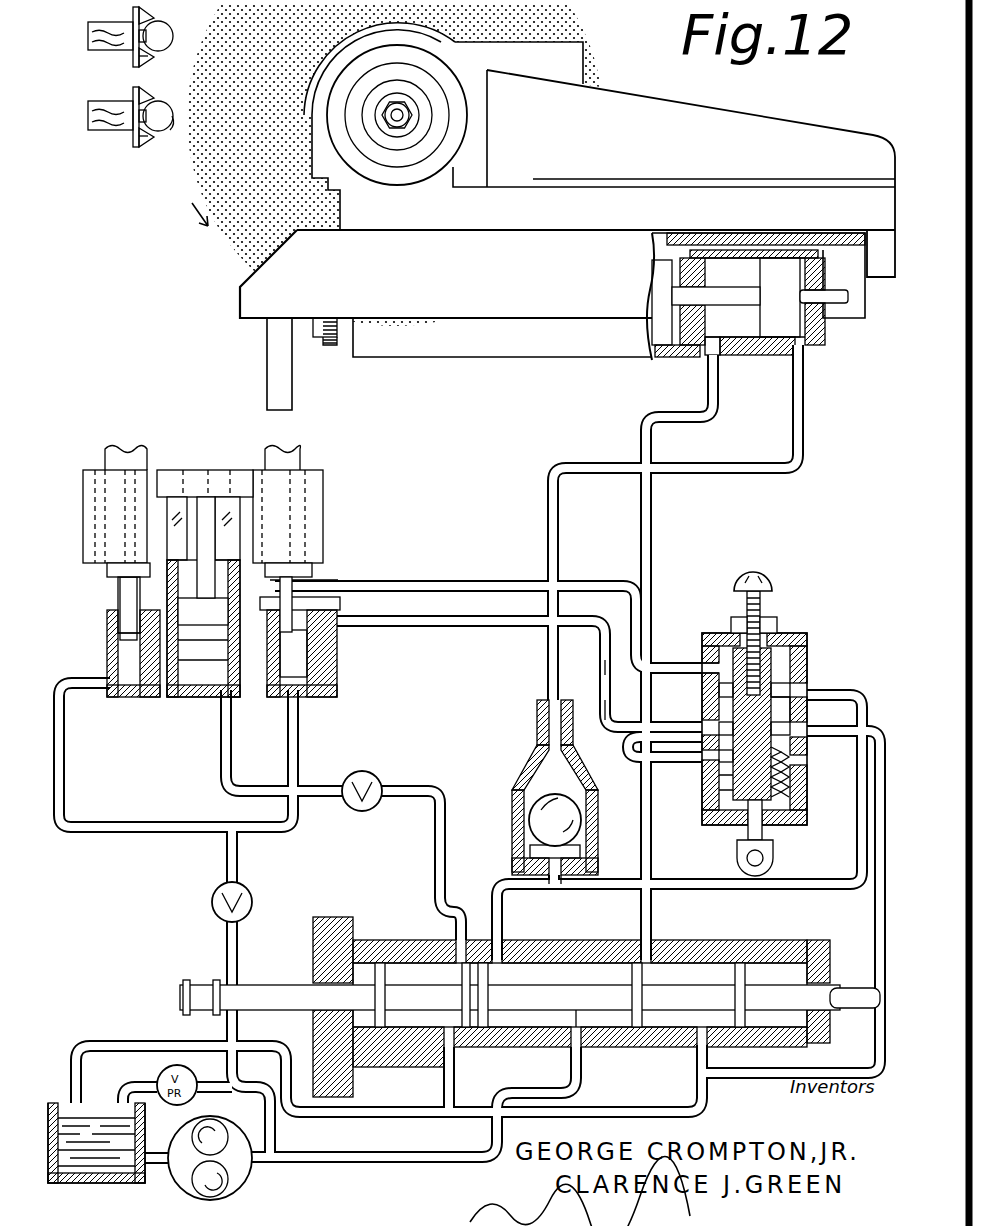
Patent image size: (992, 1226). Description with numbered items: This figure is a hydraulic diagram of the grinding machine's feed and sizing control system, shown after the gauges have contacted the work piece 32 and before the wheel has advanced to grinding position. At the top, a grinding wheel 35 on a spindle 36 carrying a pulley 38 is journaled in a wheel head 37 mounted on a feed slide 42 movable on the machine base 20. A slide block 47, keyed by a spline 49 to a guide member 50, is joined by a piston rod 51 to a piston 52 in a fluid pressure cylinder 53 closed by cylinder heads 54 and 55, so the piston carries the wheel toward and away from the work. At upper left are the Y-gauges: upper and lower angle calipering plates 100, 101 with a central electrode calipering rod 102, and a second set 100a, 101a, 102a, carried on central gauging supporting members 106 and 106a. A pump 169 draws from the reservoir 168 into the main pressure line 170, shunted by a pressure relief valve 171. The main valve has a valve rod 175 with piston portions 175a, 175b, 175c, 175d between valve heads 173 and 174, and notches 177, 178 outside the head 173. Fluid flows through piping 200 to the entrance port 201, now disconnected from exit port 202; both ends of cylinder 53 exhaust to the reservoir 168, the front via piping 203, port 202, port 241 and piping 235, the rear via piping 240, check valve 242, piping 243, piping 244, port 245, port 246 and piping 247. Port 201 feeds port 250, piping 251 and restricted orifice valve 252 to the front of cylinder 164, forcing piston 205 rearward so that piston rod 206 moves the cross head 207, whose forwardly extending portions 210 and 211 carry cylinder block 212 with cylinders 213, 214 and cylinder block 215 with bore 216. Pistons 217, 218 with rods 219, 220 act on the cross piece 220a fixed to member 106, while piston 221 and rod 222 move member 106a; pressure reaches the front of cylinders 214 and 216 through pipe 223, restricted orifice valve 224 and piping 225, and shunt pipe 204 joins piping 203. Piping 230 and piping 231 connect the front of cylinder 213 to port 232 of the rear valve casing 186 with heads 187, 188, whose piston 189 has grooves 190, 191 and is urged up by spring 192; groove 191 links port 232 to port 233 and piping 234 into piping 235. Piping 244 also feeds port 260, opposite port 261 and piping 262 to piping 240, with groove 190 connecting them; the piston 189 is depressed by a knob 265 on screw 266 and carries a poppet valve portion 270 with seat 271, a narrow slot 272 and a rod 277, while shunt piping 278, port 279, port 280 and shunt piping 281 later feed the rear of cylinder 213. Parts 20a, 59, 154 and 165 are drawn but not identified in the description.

The machine base 20 is at (247, 302).
The plate 20a is at (383, 350).
The work piece 32 is at (171, 31).
The grinding wheel 35 is at (247, 226).
The spindle 36 is at (394, 121).
The wheel head 37 is at (488, 170).
The pulley 38 is at (421, 184).
The feed slide 42 is at (830, 140).
The slide block 47 is at (652, 285).
The spline 49 is at (662, 358).
The guide member 50 is at (660, 241).
The piston rod 51 is at (728, 293).
The piston 52 is at (763, 325).
The fluid pressure cylinder 53 is at (768, 355).
The cylinder head 54 is at (700, 360).
The cylinder head 55 is at (828, 322).
The screw 59 is at (328, 347).
The upper angle calipering plate 100 is at (133, 96).
The second upper angle calipering plate 100a is at (133, 12).
The lower angle calipering plate 101 is at (150, 145).
The second lower angle calipering plate 101a is at (150, 55).
The central electrode calipering rod 102 is at (90, 110).
The second electrode calipering rod 102a is at (90, 31).
The central gauging supporting member 106 is at (90, 128).
The central gauging supporting member 106a is at (90, 45).
The piston rod 154 is at (160, 552).
The cylinder 164 is at (170, 690).
The valve body 165 is at (200, 698).
The fluid reservoir 168 is at (93, 1185).
The pump 169 is at (172, 1185).
The main pressure line 170 is at (258, 1163).
The pressure relief valve 171 is at (157, 1068).
The valve head 173 is at (822, 945).
The valve head 174 is at (325, 922).
The valve rod 175 is at (268, 990).
The piston portion 175a is at (376, 993).
The piston portion 175b is at (490, 998).
The piston portion 175c is at (642, 998).
The piston portion 175d is at (738, 963).
The notch 177 is at (795, 965).
The notch 178 is at (862, 985).
The valve casing 186 is at (704, 805).
The head 187 is at (805, 636).
The head 188 is at (795, 825).
The piston 189 is at (722, 785).
The annular groove 190 is at (735, 690).
The annular groove 191 is at (790, 705).
The spring 192 is at (740, 820).
The piping 200 is at (566, 1062).
The entrance port 201 is at (578, 1026).
The exit port 202 is at (637, 945).
The piping 203 is at (715, 412).
The shunt pipe 204 is at (455, 585).
The piston 205 is at (200, 625).
The piston rod 206 is at (182, 480).
The cross head 207 is at (228, 480).
The forwardly extending portion 210 is at (250, 640).
The forwardly extending portion 211 is at (108, 590).
The cylinder block 212 is at (338, 690).
The cylinder 213 is at (338, 676).
The cylinder 214 is at (262, 695).
The cylinder block 215 is at (108, 698).
The cylindrical bore 216 is at (110, 665).
The piston 217 is at (338, 657).
The piston 218 is at (255, 660).
The piston rod 219 is at (340, 604).
The piston rod 220 is at (290, 568).
The cross piece 220a is at (325, 578).
The piston 221 is at (110, 630).
The piston rod 222 is at (110, 608).
The pipe 223 is at (226, 935).
The restricted orifice valve 224 is at (212, 908).
The piping 225 is at (298, 733).
The piping 230 is at (465, 624).
The piping 231 is at (628, 722).
The port 232 is at (720, 730).
The port 233 is at (805, 733).
The piping 234 is at (880, 712).
The piping 235 is at (82, 1050).
The piping 240 is at (806, 388).
The port 241 is at (705, 1042).
The check valve 242 is at (520, 768).
The piping 243 is at (548, 882).
The piping 244 is at (868, 680).
The port 245 is at (468, 972).
The port 246 is at (435, 1040).
The piping 247 is at (445, 1085).
The port 250 is at (503, 936).
The piping 251 is at (220, 762).
The restricted orifice valve 252 is at (357, 810).
The port 260 is at (790, 683).
The port 261 is at (712, 668).
The piping 262 is at (590, 668).
The knob 265 is at (750, 572).
The screw 266 is at (762, 608).
The poppet valve portion 270 is at (770, 625).
The seat 271 is at (720, 688).
The narrow slot 272 is at (735, 625).
The rod 277 is at (770, 843).
The shunt piping 278 is at (792, 790).
The port 279 is at (792, 762).
The port 280 is at (720, 757).
The shunt piping 281 is at (628, 755).